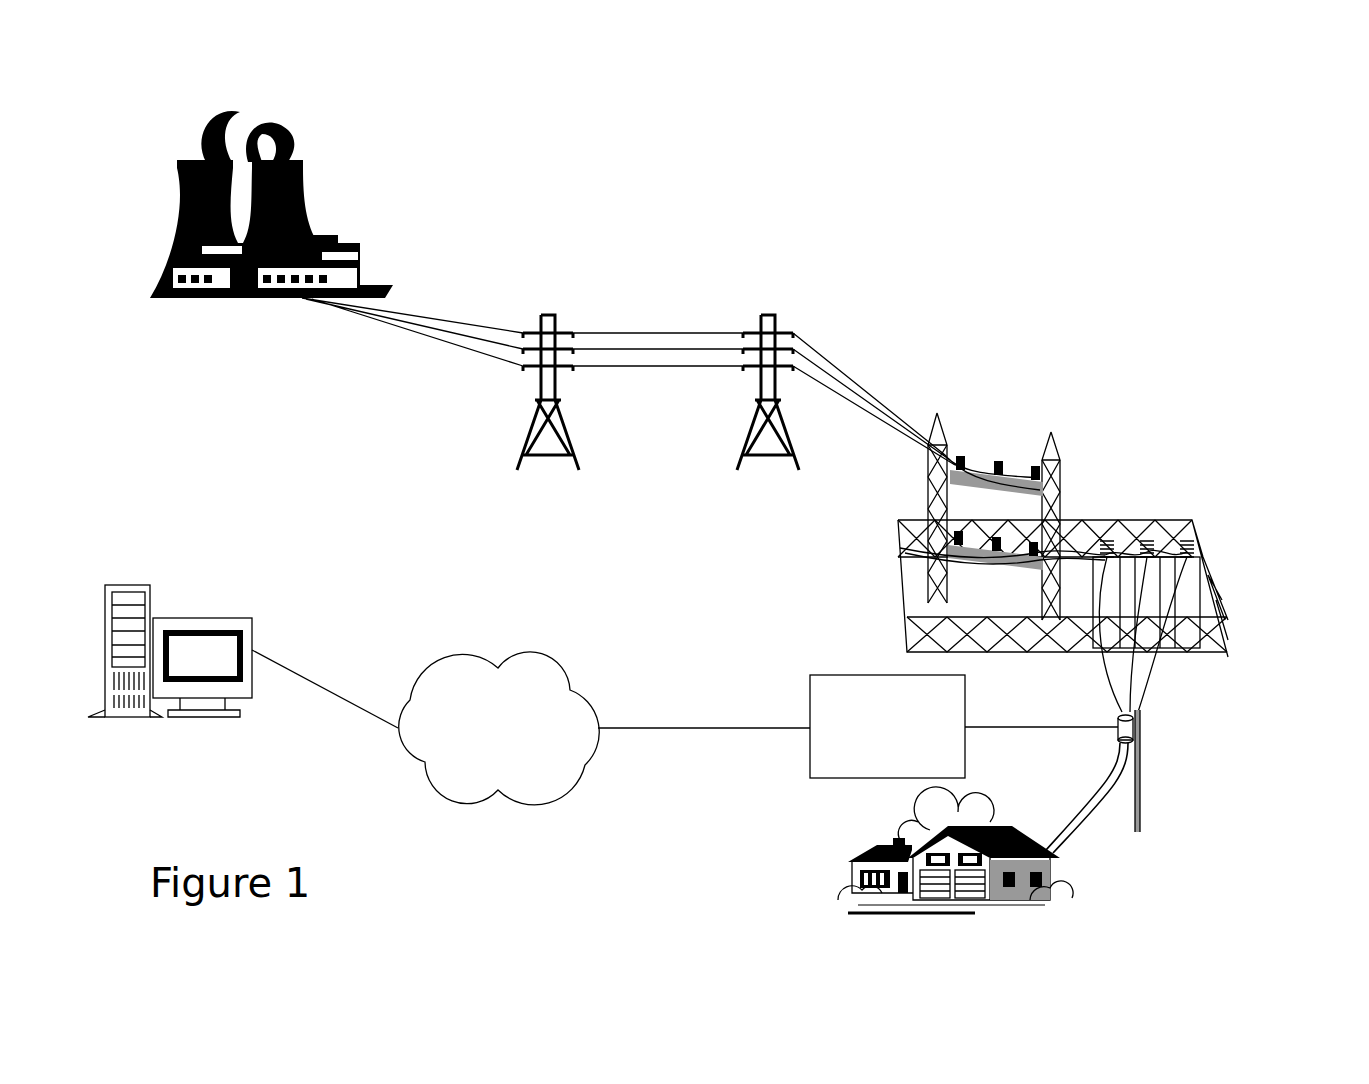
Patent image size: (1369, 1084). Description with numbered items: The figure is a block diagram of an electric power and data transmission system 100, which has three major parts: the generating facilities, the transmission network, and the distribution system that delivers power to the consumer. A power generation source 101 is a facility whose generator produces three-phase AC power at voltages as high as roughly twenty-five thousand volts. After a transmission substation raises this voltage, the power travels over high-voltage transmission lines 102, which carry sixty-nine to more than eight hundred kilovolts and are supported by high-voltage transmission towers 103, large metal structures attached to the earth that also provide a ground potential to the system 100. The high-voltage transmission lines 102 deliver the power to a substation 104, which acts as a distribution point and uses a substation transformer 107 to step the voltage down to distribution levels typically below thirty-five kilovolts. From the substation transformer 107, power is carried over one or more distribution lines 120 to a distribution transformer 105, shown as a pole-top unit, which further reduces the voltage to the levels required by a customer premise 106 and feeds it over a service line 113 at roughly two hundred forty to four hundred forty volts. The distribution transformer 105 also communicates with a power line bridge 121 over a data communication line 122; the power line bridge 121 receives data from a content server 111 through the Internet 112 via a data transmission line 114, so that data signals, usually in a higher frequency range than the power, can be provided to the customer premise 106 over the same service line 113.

The electric power and data transmission system 100 is at (1134, 166).
The power generation source 101 is at (274, 178).
The high-voltage transmission lines 102 is at (802, 311).
The high-voltage transmission towers 103 is at (733, 453).
The substation 104 is at (1009, 535).
The distribution transformer 105 is at (1140, 734).
The customer premise 106 is at (902, 850).
The substation transformer 107 is at (1207, 566).
The content server 111 is at (243, 688).
The Internet 112 is at (499, 728).
The service line 113 is at (1086, 826).
The data transmission line 114 is at (704, 741).
The distribution line 120 is at (1149, 672).
The power line bridge 121 is at (887, 726).
The data communication line 122 is at (1041, 741).